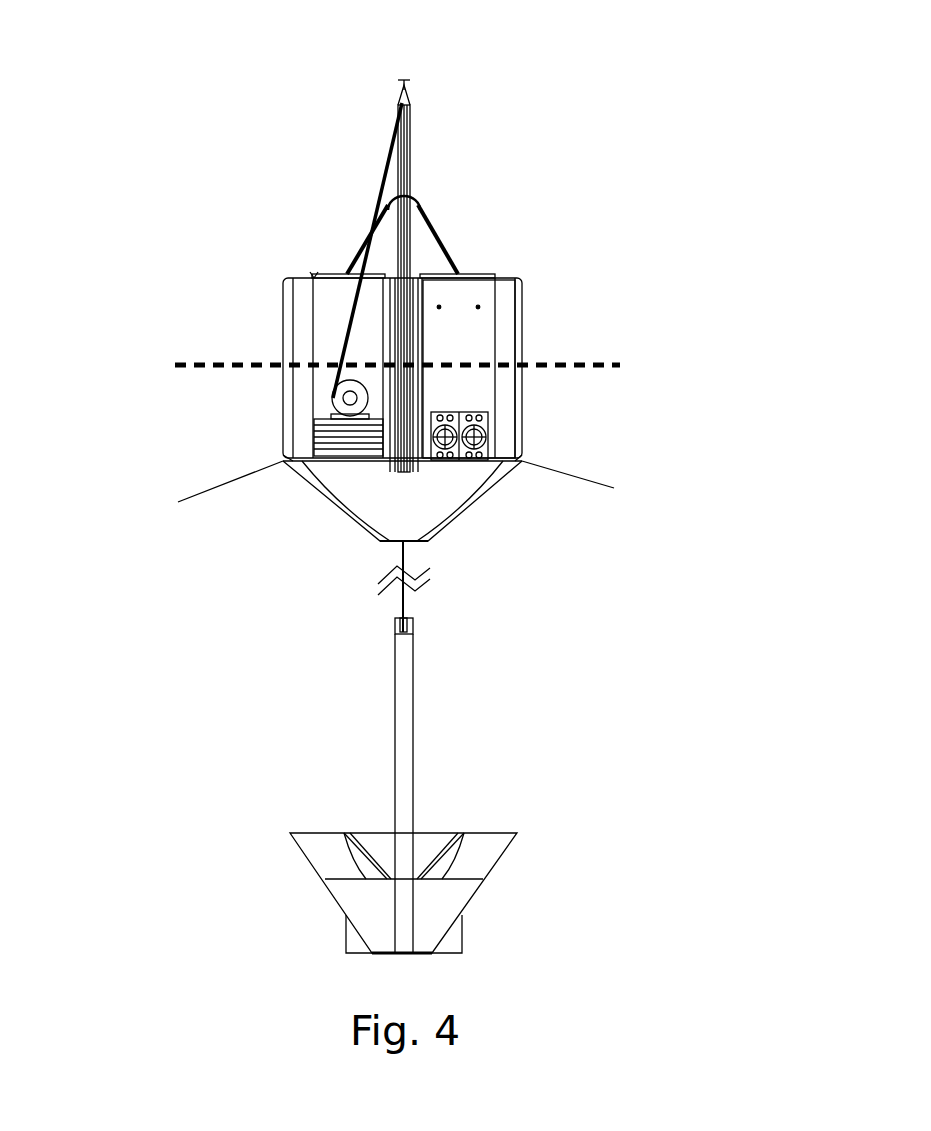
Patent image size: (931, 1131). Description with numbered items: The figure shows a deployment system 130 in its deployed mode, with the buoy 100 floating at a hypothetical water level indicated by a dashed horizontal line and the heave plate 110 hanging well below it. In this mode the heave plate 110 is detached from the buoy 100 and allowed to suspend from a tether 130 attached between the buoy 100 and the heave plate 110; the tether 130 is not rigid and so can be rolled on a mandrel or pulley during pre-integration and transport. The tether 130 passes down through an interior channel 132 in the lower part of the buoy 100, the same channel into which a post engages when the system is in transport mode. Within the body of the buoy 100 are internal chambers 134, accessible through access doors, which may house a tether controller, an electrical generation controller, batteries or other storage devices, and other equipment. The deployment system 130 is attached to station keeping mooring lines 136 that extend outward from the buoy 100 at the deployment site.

The buoy 100 is at (318, 263).
The heave plate 110 is at (303, 814).
The tether 130 is at (158, 56).
The interior channel 132 is at (408, 544).
The internal chambers 134 is at (466, 298).
The station keeping mooring lines 136 is at (247, 470).